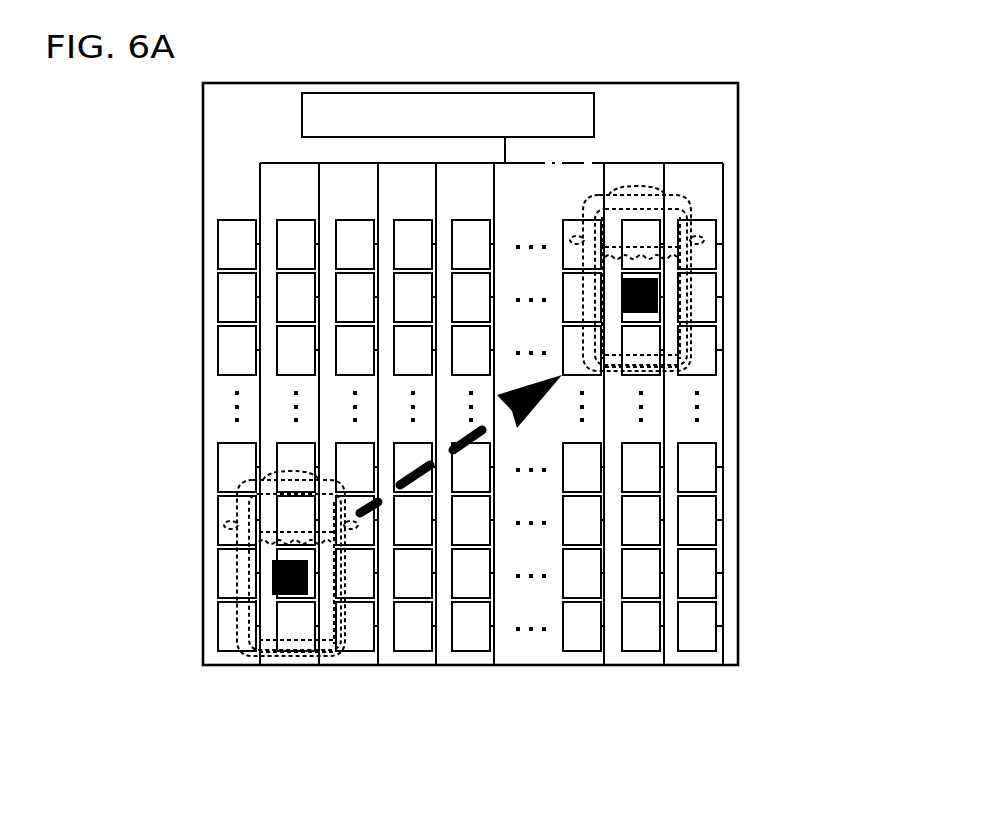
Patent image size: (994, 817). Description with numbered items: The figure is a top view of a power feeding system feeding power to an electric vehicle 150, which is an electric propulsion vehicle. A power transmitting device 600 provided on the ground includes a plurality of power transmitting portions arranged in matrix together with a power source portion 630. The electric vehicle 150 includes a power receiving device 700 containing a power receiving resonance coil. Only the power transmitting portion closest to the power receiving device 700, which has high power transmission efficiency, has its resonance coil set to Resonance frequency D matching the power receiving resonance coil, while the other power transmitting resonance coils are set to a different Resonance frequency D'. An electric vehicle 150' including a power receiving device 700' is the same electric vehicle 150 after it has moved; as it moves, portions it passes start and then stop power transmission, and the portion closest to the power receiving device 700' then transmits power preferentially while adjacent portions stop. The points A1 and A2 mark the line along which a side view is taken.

The power transmitting device 600 is at (738, 180).
The power source portion 630 is at (448, 128).
The power receiving device 700 is at (263, 609).
The electric vehicle 150 is at (200, 650).
The power receiving device 700' is at (679, 286).
The electric vehicle 150' is at (707, 260).
The line A1-A2 endpoint A1 is at (768, 685).
The line A1-A2 endpoint A2 is at (766, 77).